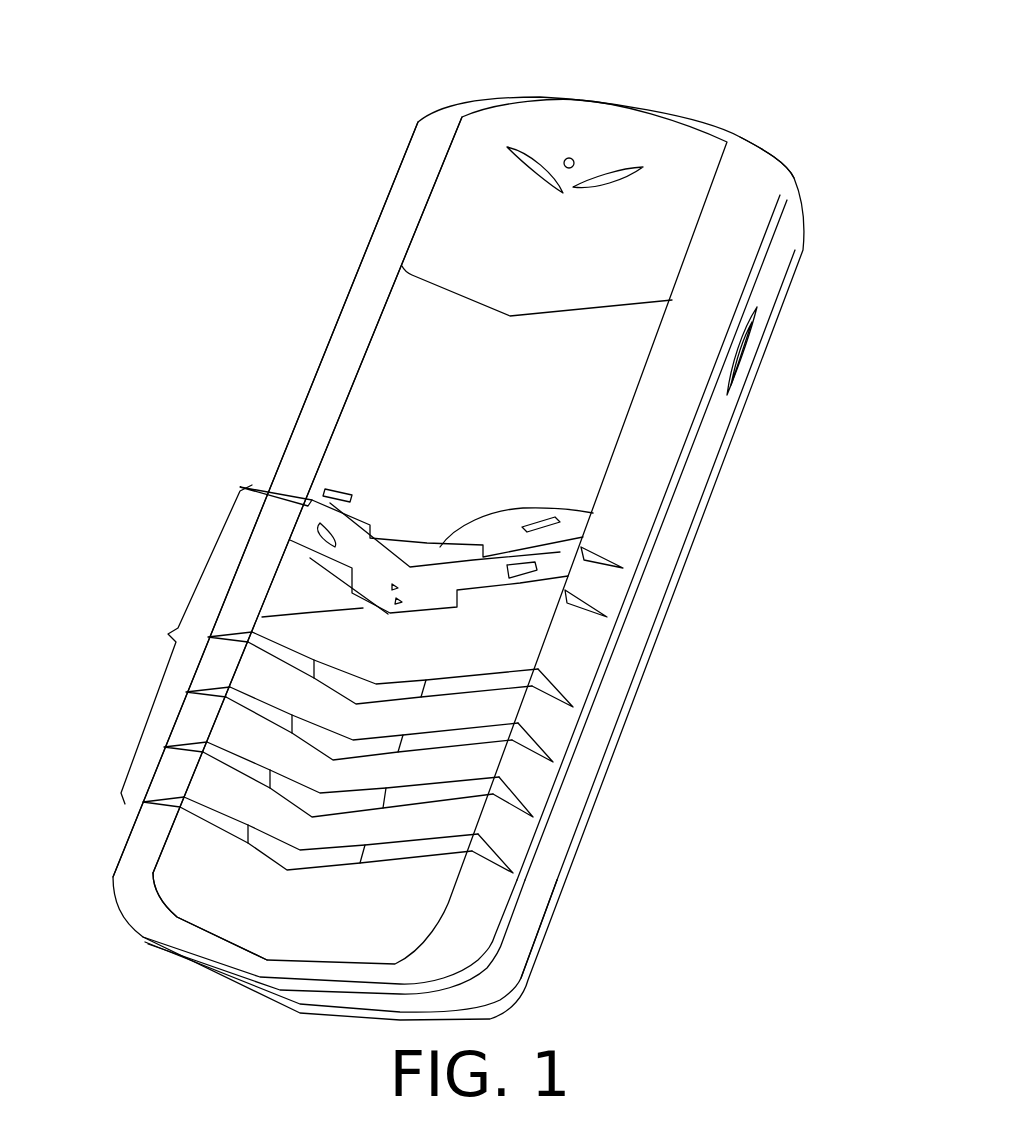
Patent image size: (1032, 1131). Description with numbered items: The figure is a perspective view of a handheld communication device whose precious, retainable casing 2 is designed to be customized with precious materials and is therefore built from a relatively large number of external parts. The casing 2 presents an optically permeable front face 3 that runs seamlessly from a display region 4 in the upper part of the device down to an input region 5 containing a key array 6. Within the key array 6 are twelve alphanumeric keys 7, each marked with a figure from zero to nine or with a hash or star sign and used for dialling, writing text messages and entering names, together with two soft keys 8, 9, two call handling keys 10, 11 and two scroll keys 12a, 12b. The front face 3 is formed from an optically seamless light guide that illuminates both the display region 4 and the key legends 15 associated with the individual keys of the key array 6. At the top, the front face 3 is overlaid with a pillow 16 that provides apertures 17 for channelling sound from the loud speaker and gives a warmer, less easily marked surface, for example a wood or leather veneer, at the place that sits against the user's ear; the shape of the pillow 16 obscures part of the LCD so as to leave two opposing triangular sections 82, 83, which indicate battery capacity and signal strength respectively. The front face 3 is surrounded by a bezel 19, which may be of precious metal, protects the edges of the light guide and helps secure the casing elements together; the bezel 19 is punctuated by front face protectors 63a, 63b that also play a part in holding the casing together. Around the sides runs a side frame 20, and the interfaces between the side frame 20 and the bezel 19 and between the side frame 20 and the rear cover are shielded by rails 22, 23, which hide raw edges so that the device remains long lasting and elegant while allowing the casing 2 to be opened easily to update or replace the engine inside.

The casing 2 is at (546, 977).
The front face 3 is at (370, 393).
The display region 4 is at (597, 424).
The input region 5 is at (528, 630).
The key array 6 is at (416, 679).
The alphanumeric keys 7 is at (492, 788).
The soft key 8 is at (560, 545).
The soft key 9 is at (327, 497).
The call handling key 10 is at (313, 557).
The call handling key 11 is at (543, 593).
The scroll key 12a is at (605, 555).
The scroll key 12b is at (345, 605).
The key legends 15 is at (505, 727).
The pillow 16 is at (484, 138).
The apertures 17 is at (569, 157).
The bezel 19 is at (753, 167).
The side frame 20 is at (773, 263).
The rail 22 is at (783, 200).
The rail 23 is at (780, 313).
The front face protector 63a is at (200, 894).
The front face protector 63b is at (545, 808).
The triangular section 82 is at (400, 310).
The triangular section 83 is at (625, 345).